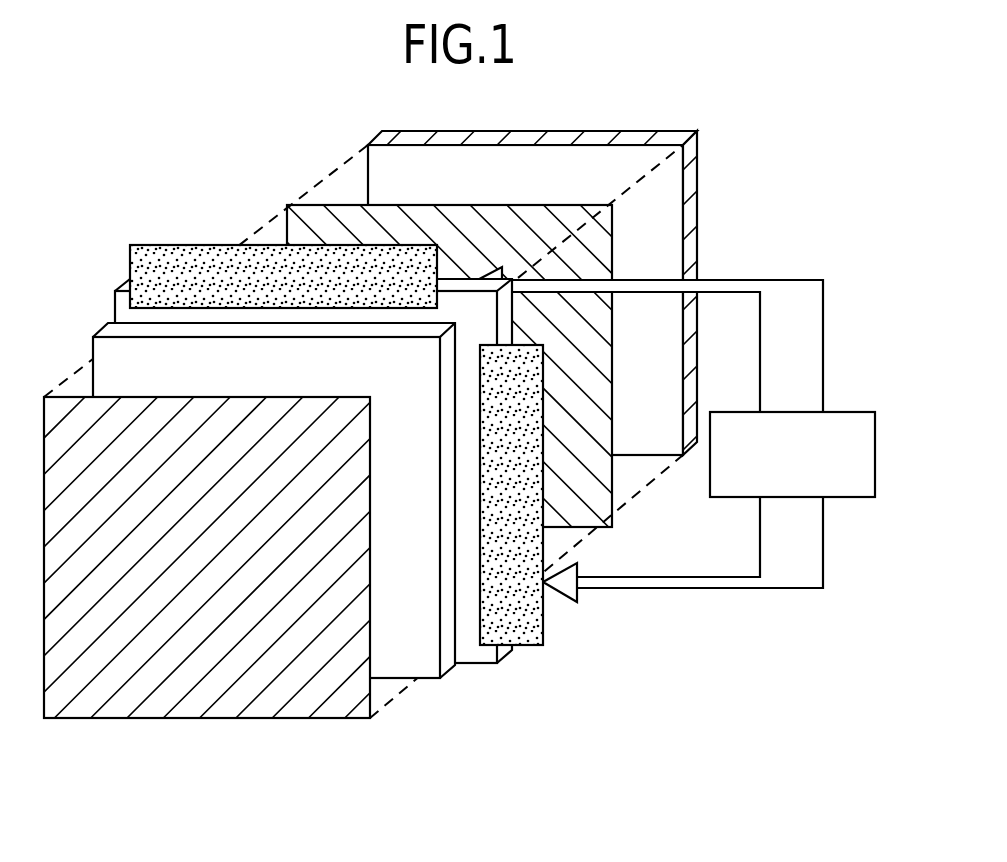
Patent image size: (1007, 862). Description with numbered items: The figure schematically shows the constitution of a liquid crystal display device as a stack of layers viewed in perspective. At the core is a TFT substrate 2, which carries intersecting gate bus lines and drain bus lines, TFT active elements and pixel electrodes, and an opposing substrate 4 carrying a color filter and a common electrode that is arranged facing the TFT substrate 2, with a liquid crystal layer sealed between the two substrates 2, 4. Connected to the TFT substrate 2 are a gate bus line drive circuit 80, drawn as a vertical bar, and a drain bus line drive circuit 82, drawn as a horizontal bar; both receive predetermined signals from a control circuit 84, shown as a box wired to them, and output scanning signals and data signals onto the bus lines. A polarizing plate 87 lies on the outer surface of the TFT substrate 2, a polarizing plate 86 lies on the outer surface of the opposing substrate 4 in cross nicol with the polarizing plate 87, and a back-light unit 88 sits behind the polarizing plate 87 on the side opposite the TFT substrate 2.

The TFT substrate 2 is at (472, 665).
The opposing substrate 4 is at (440, 680).
The gate bus line drive circuit 80 is at (536, 633).
The drain bus line drive circuit 82 is at (183, 253).
The control circuit 84 is at (862, 412).
The polarizing plate 86 is at (220, 712).
The polarizing plate 87 is at (600, 503).
The back-light unit 88 is at (696, 182).